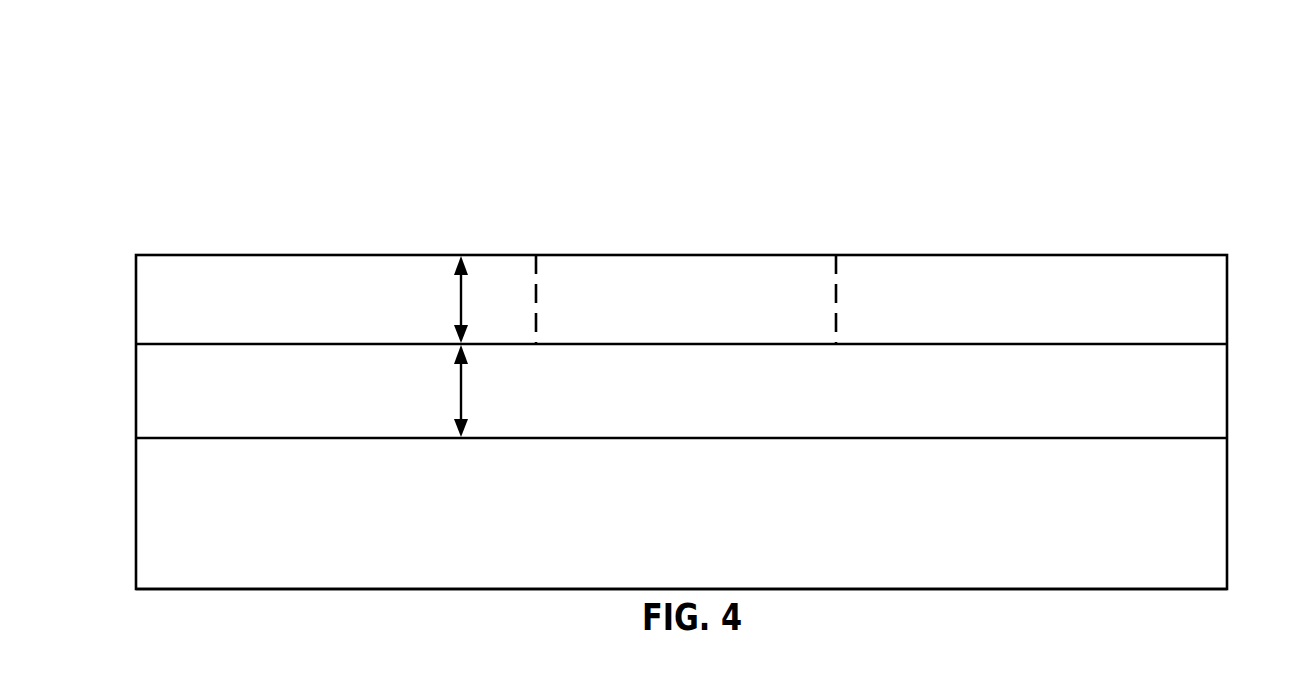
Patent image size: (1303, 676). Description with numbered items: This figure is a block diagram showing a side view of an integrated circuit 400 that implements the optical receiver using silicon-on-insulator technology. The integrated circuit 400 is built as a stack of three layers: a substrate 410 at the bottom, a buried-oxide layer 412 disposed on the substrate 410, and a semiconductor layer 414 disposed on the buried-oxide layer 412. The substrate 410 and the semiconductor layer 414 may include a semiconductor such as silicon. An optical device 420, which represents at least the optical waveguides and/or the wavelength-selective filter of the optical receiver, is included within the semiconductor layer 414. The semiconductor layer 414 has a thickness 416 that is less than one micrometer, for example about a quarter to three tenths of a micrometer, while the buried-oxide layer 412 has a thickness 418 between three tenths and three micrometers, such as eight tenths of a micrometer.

The integrated circuit 400 is at (1083, 110).
The substrate 410 is at (699, 537).
The buried-oxide layer 412 is at (1220, 416).
The semiconductor layer 414 is at (1220, 322).
The thickness 416 is at (458, 312).
The thickness 418 is at (458, 405).
The optical device 420 is at (702, 322).